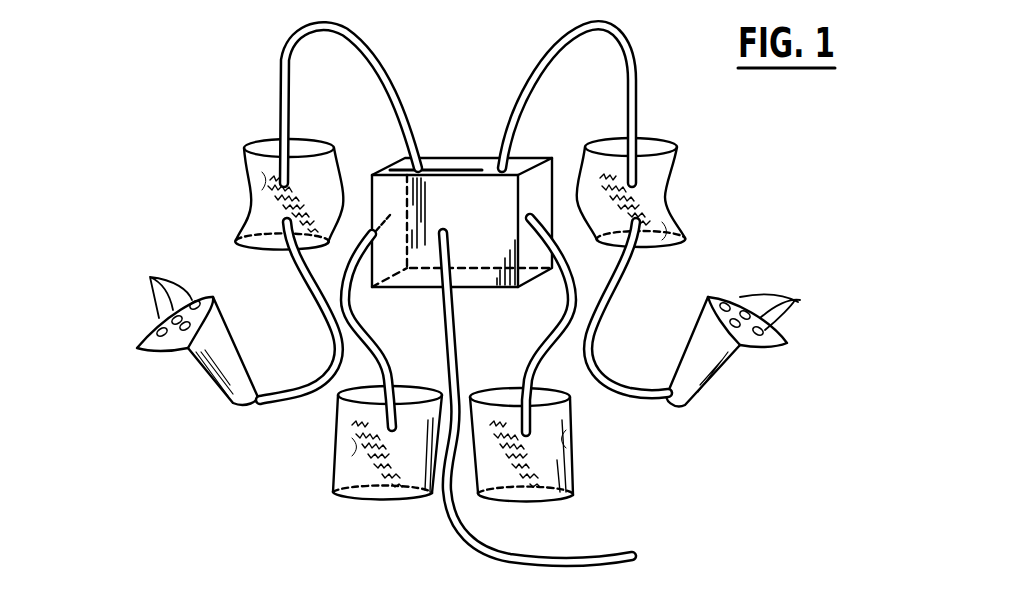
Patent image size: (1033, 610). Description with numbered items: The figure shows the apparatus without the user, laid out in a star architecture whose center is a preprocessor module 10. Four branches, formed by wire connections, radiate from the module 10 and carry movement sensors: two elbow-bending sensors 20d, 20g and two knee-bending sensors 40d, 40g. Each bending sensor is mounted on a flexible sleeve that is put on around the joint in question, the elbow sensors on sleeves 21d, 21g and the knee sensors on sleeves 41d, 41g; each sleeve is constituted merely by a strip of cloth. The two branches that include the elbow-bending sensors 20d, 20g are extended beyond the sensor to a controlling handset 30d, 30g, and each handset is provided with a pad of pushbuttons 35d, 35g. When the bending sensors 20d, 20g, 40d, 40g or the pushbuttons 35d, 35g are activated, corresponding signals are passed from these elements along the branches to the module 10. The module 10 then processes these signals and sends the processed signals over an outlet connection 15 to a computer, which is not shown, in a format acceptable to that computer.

The preprocessor module 10 is at (473, 197).
The outlet connection 15 is at (603, 563).
The elbow-bending sensor 20d is at (256, 222).
The flexible sleeve 21d is at (256, 173).
The elbow-bending sensor 20g is at (648, 186).
The flexible sleeve 21g is at (662, 224).
The controlling handset 30d is at (210, 378).
The pad of pushbuttons 35d is at (148, 279).
The controlling handset 30g is at (712, 355).
The pad of pushbuttons 35g is at (800, 302).
The knee-bending sensor 40d is at (350, 467).
The flexible sleeve 41d is at (353, 443).
The knee-bending sensor 40g is at (577, 480).
The flexible sleeve 41g is at (575, 434).